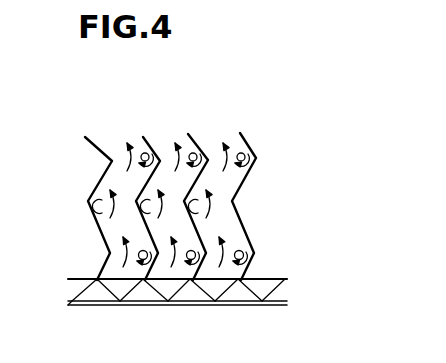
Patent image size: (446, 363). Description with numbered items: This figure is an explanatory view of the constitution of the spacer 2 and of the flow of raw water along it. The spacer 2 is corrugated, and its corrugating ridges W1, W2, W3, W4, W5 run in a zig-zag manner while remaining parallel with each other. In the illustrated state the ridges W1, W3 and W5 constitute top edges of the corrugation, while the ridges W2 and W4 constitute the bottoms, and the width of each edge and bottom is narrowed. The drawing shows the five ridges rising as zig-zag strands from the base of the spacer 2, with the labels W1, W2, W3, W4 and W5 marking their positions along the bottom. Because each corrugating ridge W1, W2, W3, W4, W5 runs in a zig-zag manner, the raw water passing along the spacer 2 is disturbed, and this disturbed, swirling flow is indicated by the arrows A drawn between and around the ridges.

The spacer 2 is at (288, 206).
The arrows A is at (143, 137).
The corrugating ridge W1 is at (85, 304).
The corrugating ridge W2 is at (115, 306).
The corrugating ridge W3 is at (198, 321).
The corrugating ridge W4 is at (242, 325).
The corrugating ridge W5 is at (267, 314).